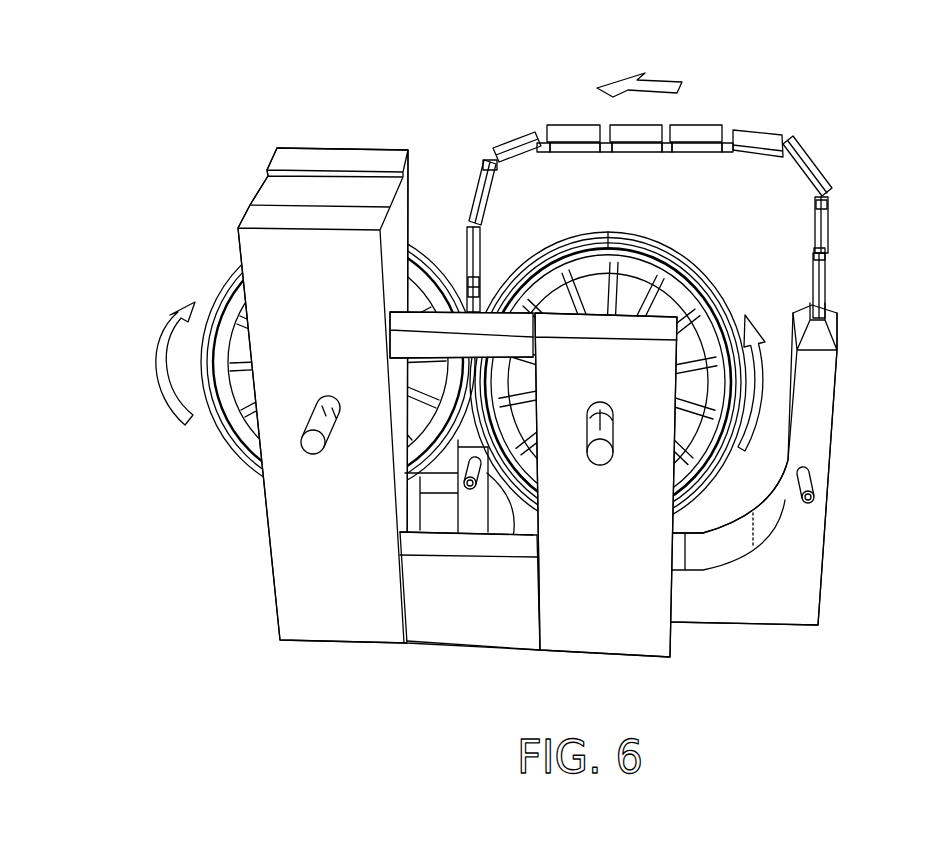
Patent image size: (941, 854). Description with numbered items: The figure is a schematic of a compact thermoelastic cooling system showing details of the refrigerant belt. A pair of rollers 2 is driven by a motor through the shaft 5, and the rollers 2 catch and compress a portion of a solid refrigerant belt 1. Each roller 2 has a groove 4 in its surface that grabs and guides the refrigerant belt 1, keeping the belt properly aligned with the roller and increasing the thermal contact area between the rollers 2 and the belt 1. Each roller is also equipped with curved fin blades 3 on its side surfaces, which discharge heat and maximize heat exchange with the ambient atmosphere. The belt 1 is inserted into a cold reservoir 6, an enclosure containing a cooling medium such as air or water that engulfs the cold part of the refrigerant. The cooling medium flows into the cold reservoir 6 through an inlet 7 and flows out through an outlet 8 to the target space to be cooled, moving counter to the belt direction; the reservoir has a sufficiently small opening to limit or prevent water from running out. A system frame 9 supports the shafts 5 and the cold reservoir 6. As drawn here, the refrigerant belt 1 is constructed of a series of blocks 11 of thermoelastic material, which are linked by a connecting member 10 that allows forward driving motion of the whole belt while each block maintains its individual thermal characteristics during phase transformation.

The solid refrigerant belt 1 is at (697, 177).
The roller 2 is at (428, 250).
The fin blades 3 is at (705, 352).
The groove 4 is at (627, 260).
The shaft 5 is at (310, 425).
The cold reservoir 6 is at (830, 390).
The inlet 7 is at (817, 485).
The outlet 8 is at (480, 473).
The system frame 9 is at (303, 160).
The connecting member 10 is at (828, 200).
The blocks 11 is at (690, 128).